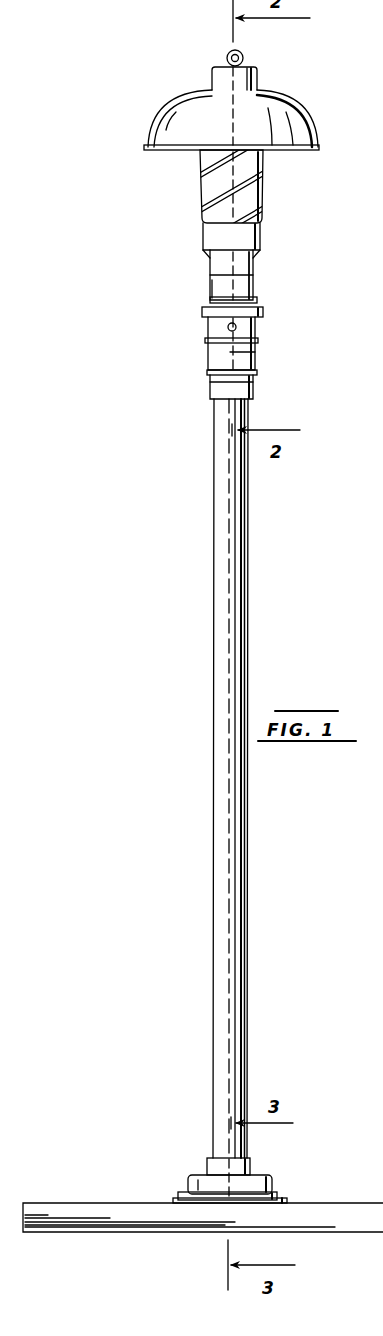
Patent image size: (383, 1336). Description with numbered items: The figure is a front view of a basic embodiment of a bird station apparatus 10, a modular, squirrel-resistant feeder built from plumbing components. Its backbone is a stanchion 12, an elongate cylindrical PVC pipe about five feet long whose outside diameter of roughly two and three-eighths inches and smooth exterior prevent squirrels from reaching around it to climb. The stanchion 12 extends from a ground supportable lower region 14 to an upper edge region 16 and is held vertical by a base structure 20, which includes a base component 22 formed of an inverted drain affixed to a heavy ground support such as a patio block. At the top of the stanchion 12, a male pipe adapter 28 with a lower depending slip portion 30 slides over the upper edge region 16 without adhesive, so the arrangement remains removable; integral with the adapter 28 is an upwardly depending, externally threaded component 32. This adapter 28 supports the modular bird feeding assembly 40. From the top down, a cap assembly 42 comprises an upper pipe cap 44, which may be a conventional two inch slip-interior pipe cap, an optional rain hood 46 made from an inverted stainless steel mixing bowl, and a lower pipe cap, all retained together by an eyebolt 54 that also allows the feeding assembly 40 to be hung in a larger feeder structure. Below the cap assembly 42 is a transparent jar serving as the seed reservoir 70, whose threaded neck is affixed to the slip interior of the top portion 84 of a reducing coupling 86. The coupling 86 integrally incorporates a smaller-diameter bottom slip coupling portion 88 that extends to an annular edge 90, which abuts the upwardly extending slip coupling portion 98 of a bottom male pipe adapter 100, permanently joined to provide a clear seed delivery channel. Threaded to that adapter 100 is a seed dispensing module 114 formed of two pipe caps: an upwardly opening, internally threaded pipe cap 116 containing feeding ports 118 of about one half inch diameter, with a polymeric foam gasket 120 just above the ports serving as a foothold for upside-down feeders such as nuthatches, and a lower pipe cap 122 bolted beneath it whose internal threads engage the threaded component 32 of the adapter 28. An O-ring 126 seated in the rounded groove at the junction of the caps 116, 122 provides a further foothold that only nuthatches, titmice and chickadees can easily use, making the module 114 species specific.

The bird station apparatus 10 is at (150, 56).
The stanchion 12 is at (248, 848).
The lower region 14 is at (292, 1178).
The upper edge region 16 is at (200, 404).
The base structure 20 is at (118, 1182).
The base component 22 is at (188, 1178).
The male pipe adapter 28 is at (207, 373).
The slip portion 30 is at (250, 390).
The externally threaded component 32 is at (250, 372).
The modular bird feeding assembly 40 is at (300, 185).
The cap assembly 42 is at (276, 86).
The cap 44 is at (212, 78).
The rain hood 46 is at (300, 116).
The eyebolt 54 is at (226, 52).
The seed reservoir 70 is at (258, 203).
The top portion 84 is at (262, 232).
The reducing coupling 86 is at (258, 252).
The bottom slip coupling portion 88 is at (210, 262).
The annular edge 90 is at (253, 276).
The slip coupling portion 98 is at (217, 287).
The bottom male pipe adapter 100 is at (258, 301).
The seed dispensing module 114 is at (292, 336).
The pipe cap 116 is at (208, 330).
The feeding ports 118 is at (240, 327).
The polymeric foam gasket 120 is at (203, 312).
The pipe cap 122 is at (250, 350).
The O-ring 126 is at (205, 343).